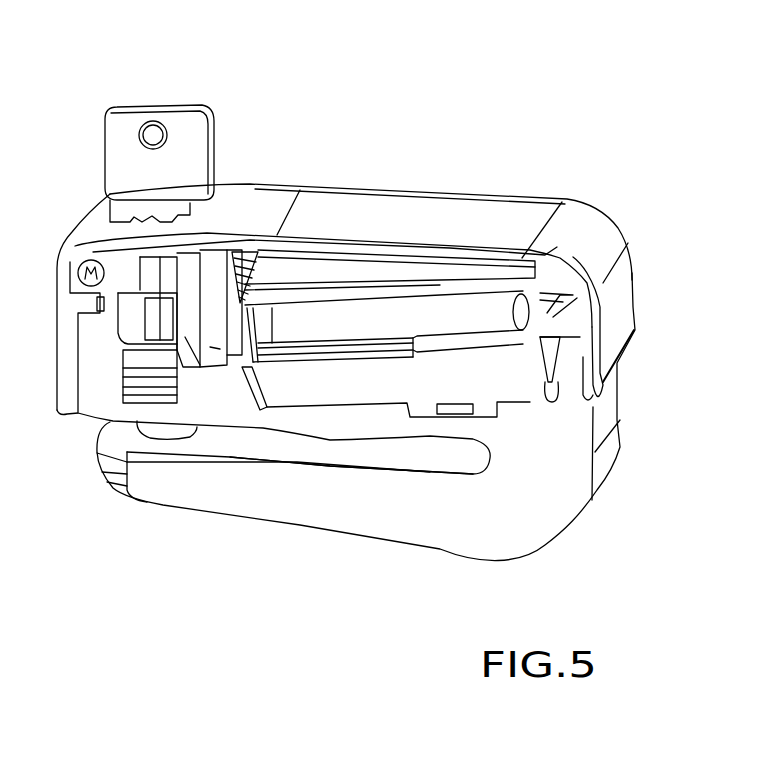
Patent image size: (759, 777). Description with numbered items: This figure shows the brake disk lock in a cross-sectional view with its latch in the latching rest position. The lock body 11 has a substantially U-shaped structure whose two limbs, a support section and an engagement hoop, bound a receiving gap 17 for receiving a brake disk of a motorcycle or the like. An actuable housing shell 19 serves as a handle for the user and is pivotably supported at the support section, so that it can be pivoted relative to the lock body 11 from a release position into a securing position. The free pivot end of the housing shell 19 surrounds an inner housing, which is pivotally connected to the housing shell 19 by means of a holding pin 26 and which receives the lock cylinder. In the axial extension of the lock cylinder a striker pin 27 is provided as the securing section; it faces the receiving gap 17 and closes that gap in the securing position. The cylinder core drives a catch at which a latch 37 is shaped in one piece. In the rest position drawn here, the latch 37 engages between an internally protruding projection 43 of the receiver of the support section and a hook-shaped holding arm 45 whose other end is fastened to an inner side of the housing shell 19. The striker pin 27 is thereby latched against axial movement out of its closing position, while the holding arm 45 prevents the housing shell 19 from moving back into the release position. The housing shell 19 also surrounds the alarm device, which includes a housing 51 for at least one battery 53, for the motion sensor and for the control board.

The lock body 11 is at (620, 497).
The receiving gap 17 is at (397, 455).
The housing shell 19 is at (596, 233).
The holding pin 26 is at (80, 264).
The striker pin 27 is at (173, 430).
The latch 37 is at (167, 320).
The projection 43 is at (189, 279).
The holding arm 45 is at (230, 400).
The housing 51 is at (383, 290).
The battery 53 is at (449, 313).